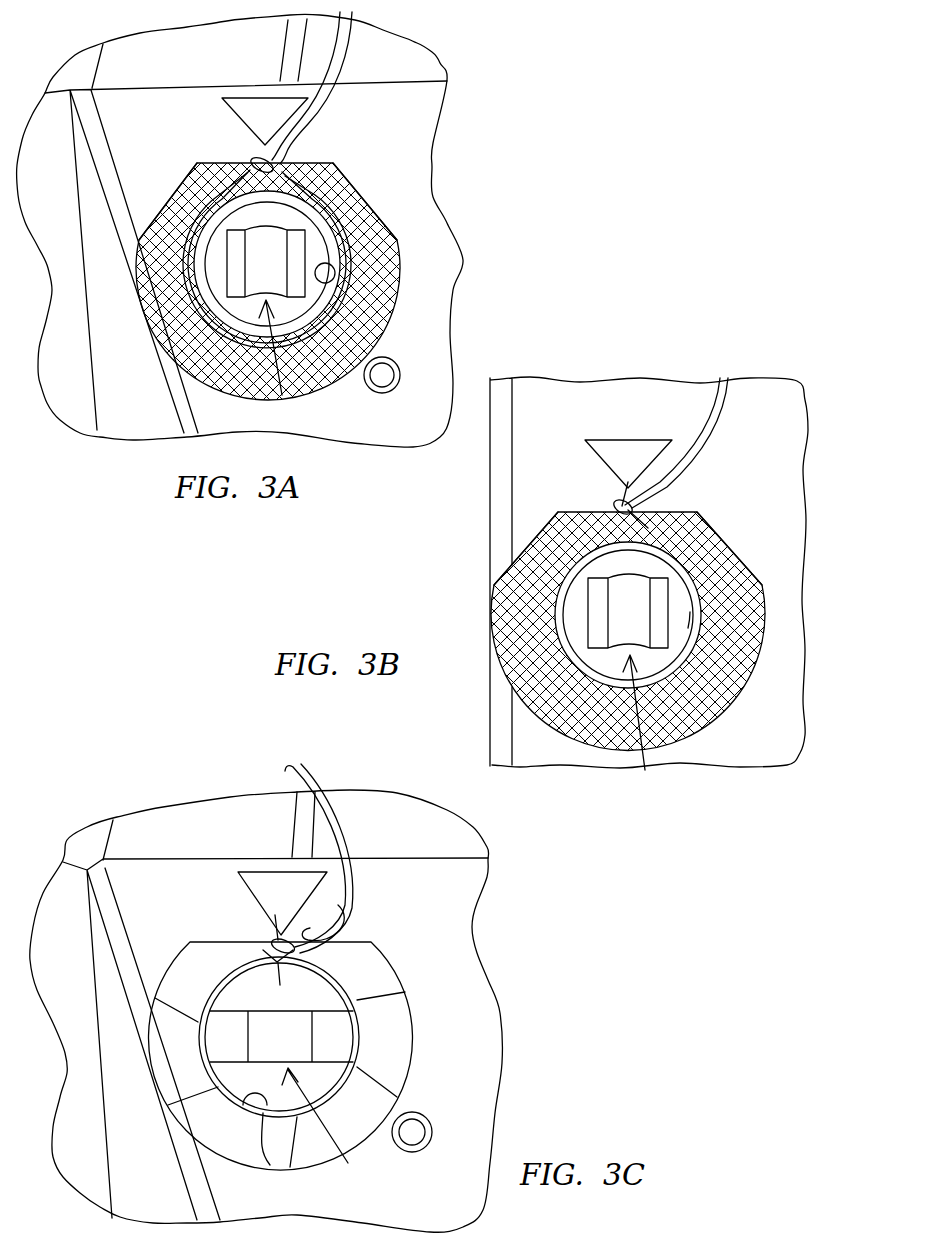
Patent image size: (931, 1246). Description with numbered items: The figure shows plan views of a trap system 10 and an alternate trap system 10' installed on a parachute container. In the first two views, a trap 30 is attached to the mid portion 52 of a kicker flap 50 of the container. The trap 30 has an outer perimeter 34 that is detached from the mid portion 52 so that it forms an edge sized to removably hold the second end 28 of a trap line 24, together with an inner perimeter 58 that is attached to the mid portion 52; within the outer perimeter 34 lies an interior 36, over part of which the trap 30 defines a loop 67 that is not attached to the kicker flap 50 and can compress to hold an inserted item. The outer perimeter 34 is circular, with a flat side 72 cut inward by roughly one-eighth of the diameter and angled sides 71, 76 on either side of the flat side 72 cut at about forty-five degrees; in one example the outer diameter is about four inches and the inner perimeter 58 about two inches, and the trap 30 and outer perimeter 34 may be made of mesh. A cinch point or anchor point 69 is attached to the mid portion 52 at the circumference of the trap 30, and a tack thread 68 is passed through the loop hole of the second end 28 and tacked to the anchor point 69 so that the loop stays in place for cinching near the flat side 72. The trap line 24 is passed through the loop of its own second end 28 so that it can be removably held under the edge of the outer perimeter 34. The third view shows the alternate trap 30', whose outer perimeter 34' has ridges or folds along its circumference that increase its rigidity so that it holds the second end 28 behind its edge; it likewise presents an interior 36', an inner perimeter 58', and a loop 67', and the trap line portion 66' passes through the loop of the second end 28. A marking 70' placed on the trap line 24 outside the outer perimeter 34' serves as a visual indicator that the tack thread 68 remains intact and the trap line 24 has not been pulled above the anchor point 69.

In FIG. 3A, the trap system 10 is at (288, 230).
In FIG. 3C, the trap system with alternate trap 10' is at (266, 996).
In FIG. 3A, the trap line 24 is at (355, 55).
In FIG. 3B, the trap line 24 is at (712, 415).
In FIG. 3C, the trap line 24 is at (348, 840).
In FIG. 3A, the second end of the trap line 28 is at (252, 163).
In FIG. 3B, the second end of the trap line 28 is at (617, 504).
In FIG. 3C, the second end of the trap line 28 is at (272, 945).
In FIG. 3A, the trap 30 is at (316, 281).
In FIG. 3B, the trap 30 is at (671, 630).
In FIG. 3C, the alternate trap 30' is at (268, 1019).
In FIG. 3A, the outer perimeter 34 is at (291, 281).
In FIG. 3B, the outer perimeter 34 is at (599, 631).
In FIG. 3C, the outer perimeter of the alternate trap 34' is at (317, 1056).
In FIG. 3A, the interior 36 is at (290, 364).
In FIG. 3B, the interior 36 is at (659, 729).
In FIG. 3C, the interior of the alternate trap 36' is at (343, 1127).
In FIG. 3A, the kicker flap 50 is at (394, 425).
In FIG. 3B, the kicker flap 50 is at (785, 433).
In FIG. 3C, the kicker flap 50 is at (425, 1205).
In FIG. 3A, the mid portion 52 is at (410, 125).
In FIG. 3C, the mid portion 52 is at (437, 948).
In FIG. 3A, the inner perimeter 58 is at (384, 272).
In FIG. 3B, the inner perimeter 58 is at (772, 634).
In FIG. 3C, the inner perimeter of the alternate trap 58' is at (293, 1148).
In FIG. 3C, the suture tail 66' is at (295, 979).
In FIG. 3A, the loop 67 is at (340, 261).
In FIG. 3B, the loop 67 is at (551, 611).
In FIG. 3C, the loop of the alternate trap 67' is at (347, 1031).
In FIG. 3B, the tack thread 68 is at (612, 488).
In FIG. 3C, the tack thread 68 is at (272, 925).
In FIG. 3A, the anchor point 69 is at (265, 95).
In FIG. 3B, the anchor point 69 is at (622, 438).
In FIG. 3C, the anchor point 69 is at (278, 872).
In FIG. 3C, the marking 70' is at (357, 921).
In FIG. 3A, the angled side 71 is at (180, 190).
In FIG. 3B, the angled side 71 is at (530, 540).
In FIG. 3A, the flat side 72 is at (305, 165).
In FIG. 3B, the flat side 72 is at (668, 510).
In FIG. 3A, the angled side 76 is at (350, 196).
In FIG. 3B, the angled side 76 is at (712, 530).